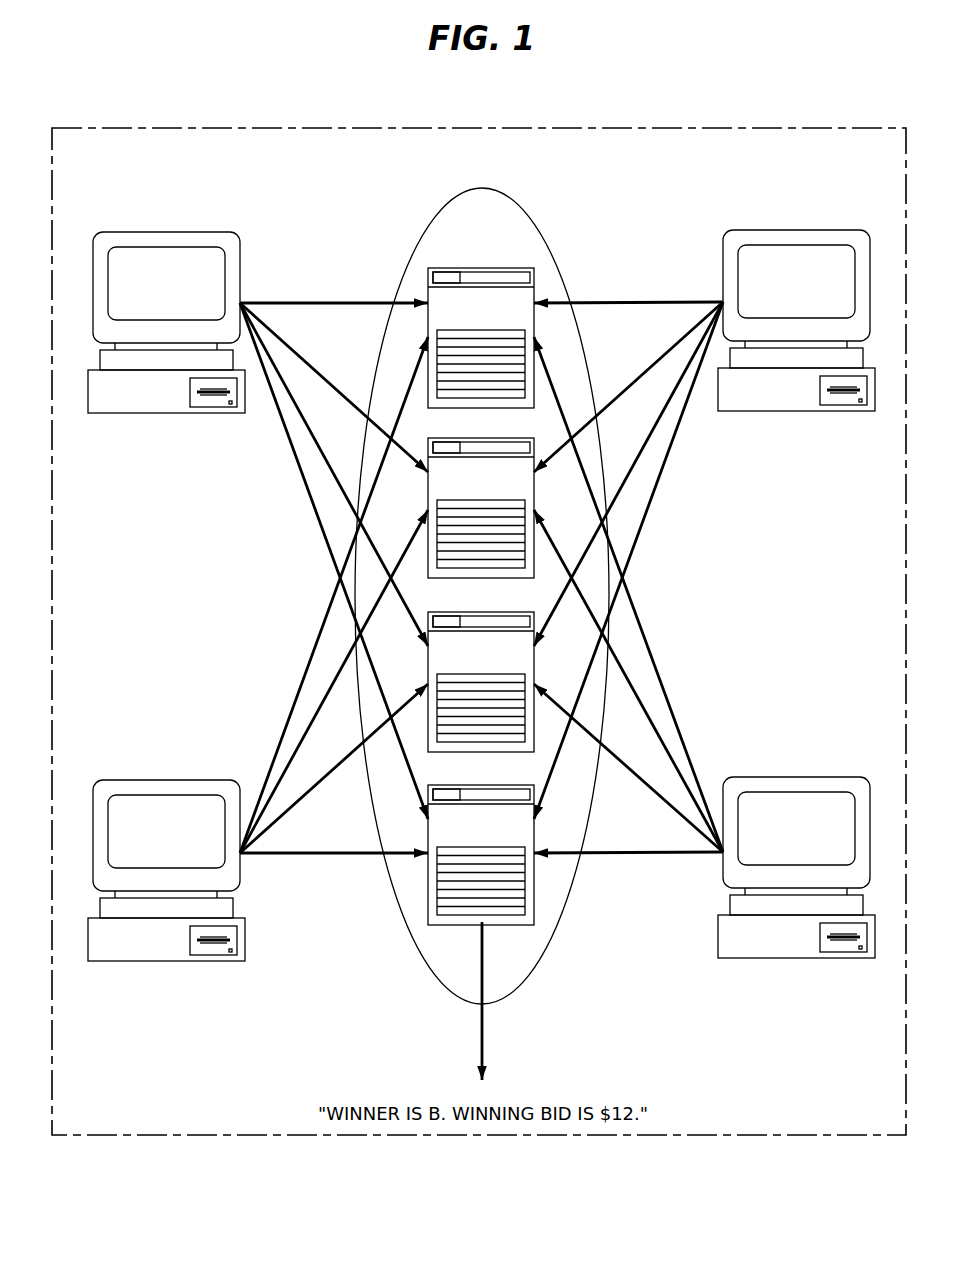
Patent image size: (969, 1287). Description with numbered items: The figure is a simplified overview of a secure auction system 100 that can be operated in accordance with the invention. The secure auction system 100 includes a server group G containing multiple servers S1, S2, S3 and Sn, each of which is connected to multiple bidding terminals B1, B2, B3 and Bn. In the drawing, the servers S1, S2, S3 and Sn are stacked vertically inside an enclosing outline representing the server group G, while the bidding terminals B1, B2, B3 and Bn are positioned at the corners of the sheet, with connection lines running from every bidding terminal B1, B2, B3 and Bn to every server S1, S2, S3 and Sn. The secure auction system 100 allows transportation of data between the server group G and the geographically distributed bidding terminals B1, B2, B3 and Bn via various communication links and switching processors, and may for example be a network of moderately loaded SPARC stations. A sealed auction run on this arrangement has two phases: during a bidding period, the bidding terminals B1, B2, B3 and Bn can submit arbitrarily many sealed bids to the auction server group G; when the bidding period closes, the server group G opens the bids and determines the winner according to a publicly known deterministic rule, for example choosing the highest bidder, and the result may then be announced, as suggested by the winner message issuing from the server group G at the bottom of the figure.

The secure auction system 100 is at (588, 127).
The server group G is at (447, 206).
The bidding terminal B1 is at (165, 232).
The bidding terminal B2 is at (165, 780).
The bidding terminal B3 is at (795, 230).
The bidding terminal Bn is at (795, 777).
The server S1 is at (485, 268).
The server S2 is at (534, 487).
The server S3 is at (534, 657).
The server Sn is at (534, 832).